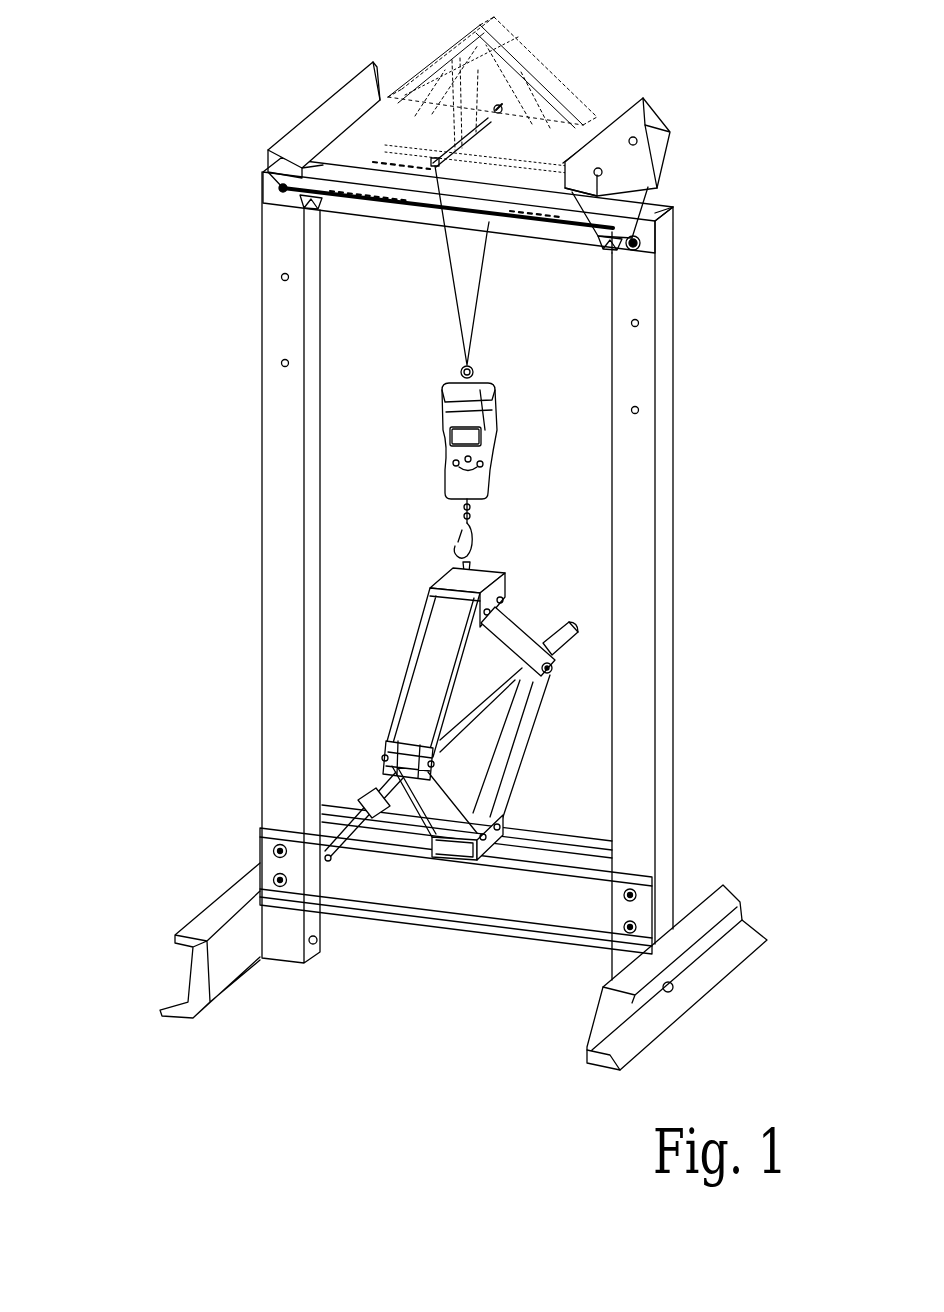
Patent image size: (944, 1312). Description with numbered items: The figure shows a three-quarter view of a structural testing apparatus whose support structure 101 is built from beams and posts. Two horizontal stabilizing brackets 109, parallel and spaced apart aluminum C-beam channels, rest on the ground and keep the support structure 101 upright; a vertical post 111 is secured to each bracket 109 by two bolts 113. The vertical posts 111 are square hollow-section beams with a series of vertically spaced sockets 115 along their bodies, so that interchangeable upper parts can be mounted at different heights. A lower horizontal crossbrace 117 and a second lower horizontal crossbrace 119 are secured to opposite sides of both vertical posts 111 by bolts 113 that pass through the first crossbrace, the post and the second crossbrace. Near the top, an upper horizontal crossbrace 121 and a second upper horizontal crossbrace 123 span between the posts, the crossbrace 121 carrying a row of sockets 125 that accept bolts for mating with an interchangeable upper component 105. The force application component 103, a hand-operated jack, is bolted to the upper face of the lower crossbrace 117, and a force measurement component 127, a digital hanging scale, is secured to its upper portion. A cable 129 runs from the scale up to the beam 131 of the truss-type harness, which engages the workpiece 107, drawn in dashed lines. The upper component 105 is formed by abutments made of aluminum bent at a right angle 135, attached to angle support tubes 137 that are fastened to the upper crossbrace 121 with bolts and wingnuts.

The support structure 101 is at (446, 614).
The force application component 103 is at (402, 712).
The upper component 105 is at (655, 192).
The workpiece 107 is at (442, 52).
The horizontal stabilizing brackets 109 is at (195, 945).
The vertical post 111 is at (262, 747).
The bolts 113 is at (273, 878).
The vertically spaced sockets 115 is at (280, 364).
The lower horizontal crossbrace 117 is at (620, 880).
The second lower horizontal crossbrace 119 is at (588, 840).
The upper horizontal crossbrace 121 is at (648, 240).
The second upper horizontal crossbrace 123 is at (660, 193).
The sockets 125 is at (354, 208).
The force measurement component 127 is at (493, 470).
The cable 129 is at (477, 328).
The beam 131 is at (498, 109).
The length of aluminum bent at 90 degrees 135 is at (318, 122).
The angle support tubes 137 is at (278, 157).